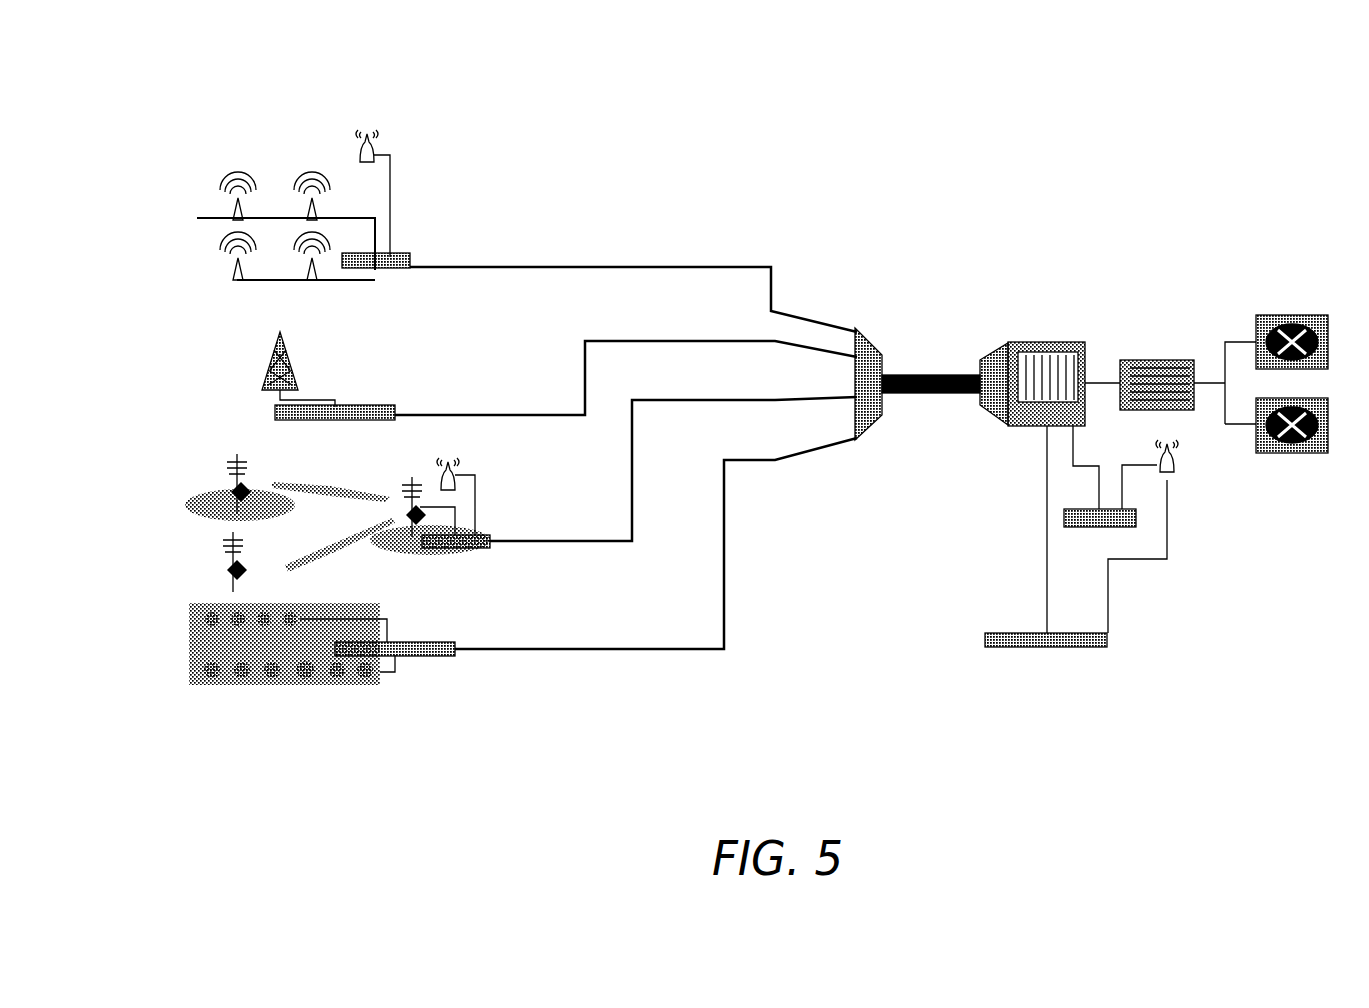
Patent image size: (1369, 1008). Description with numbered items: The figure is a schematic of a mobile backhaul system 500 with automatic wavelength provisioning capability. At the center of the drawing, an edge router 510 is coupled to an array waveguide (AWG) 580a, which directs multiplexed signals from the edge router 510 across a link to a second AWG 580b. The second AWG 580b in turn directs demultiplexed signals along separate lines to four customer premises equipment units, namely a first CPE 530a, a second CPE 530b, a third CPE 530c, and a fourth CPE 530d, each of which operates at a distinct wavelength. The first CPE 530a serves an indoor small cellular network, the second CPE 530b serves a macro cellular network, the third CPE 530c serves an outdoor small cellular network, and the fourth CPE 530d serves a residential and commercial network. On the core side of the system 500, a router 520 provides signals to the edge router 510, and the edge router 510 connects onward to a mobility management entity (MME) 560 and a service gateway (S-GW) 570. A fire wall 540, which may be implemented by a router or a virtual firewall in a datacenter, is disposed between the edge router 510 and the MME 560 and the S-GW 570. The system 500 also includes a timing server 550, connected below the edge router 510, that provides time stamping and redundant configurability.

The mobile backhaul system 500 is at (535, 105).
The first CPE 530a is at (408, 243).
The second CPE 530b is at (362, 393).
The third CPE 530c is at (452, 582).
The fourth CPE 530d is at (407, 670).
The second AWG 580b is at (852, 311).
The array waveguide (AWG) 580a is at (979, 342).
The edge router 510 is at (1045, 320).
The fire wall 540 is at (1149, 321).
The mobility management entity (MME) 560 is at (1292, 323).
The service gateway (S-GW) 570 is at (1292, 453).
The router 520 is at (1104, 530).
The timing server 550 is at (1051, 670).